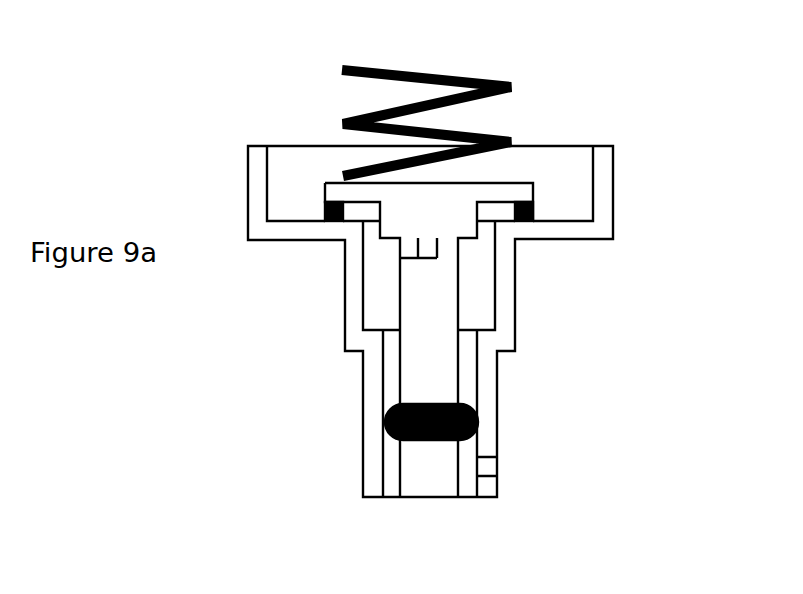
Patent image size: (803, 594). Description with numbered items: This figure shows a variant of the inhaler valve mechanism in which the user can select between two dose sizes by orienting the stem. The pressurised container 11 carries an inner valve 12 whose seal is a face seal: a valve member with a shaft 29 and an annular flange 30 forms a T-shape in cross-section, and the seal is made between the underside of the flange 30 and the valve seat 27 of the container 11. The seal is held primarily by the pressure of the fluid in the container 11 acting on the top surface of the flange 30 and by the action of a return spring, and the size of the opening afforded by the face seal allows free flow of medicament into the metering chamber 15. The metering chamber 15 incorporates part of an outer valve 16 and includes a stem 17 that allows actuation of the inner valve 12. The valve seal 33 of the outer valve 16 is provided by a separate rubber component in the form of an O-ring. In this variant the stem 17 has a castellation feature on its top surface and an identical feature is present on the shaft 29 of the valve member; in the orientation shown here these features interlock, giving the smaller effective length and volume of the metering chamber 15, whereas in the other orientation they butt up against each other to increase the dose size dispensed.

The pressurised container 11 is at (614, 181).
The inner valve 12 is at (553, 183).
The metering chamber 15 is at (382, 258).
The outer valve 16 is at (517, 460).
The stem 17 is at (418, 368).
The valve seat 27 is at (533, 221).
The shaft 29 is at (437, 202).
The annular flange 30 is at (513, 184).
The valve seal 33 is at (343, 118).